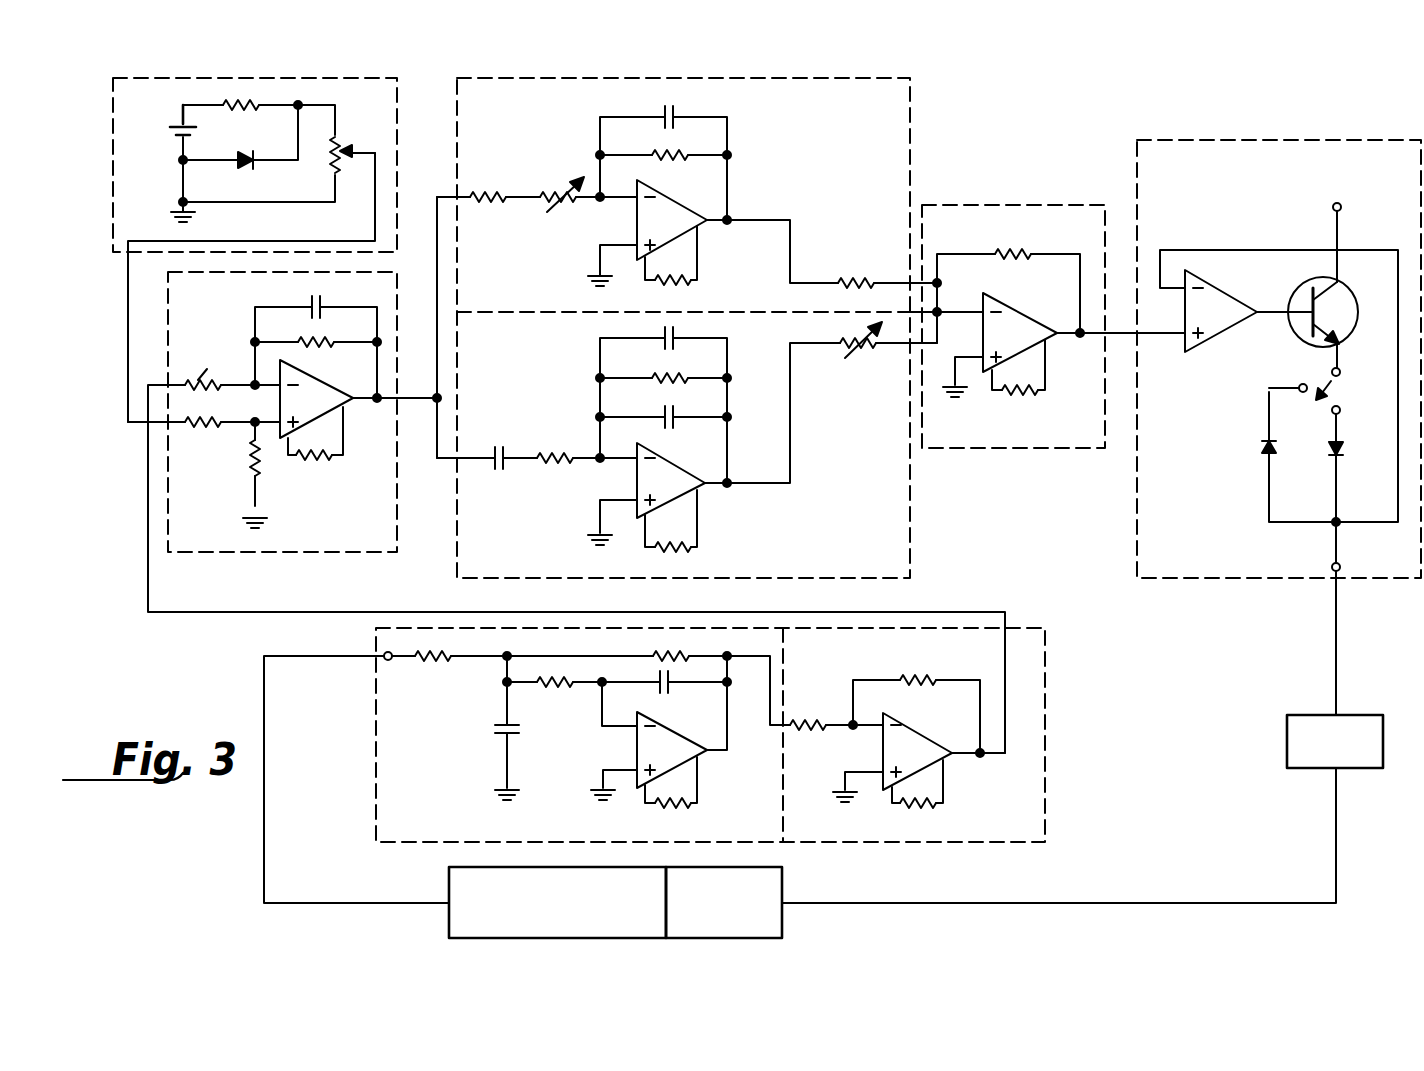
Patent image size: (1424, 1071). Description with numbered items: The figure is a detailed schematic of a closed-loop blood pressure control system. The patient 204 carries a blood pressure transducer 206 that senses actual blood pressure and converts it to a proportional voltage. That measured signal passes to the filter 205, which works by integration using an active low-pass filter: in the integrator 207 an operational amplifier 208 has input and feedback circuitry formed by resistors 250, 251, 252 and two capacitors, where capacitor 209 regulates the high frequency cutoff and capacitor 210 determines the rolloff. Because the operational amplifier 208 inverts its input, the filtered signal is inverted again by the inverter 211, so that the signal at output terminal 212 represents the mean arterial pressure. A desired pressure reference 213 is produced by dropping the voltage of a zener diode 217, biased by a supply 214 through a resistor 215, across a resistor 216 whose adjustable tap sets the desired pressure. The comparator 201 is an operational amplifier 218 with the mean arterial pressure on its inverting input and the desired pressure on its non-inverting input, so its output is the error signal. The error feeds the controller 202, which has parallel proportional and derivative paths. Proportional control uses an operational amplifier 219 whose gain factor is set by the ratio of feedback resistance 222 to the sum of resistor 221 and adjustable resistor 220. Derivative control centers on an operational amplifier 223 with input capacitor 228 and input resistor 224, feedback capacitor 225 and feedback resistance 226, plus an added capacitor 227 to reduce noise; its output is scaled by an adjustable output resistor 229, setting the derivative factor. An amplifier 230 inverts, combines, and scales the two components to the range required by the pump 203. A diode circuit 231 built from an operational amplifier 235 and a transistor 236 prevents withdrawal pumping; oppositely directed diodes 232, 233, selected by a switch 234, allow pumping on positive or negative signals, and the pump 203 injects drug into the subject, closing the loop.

The comparator 201 is at (566, 475).
The controller 202 is at (687, 314).
The pump 203 is at (1298, 722).
The patient 204 is at (785, 890).
The filter 205 is at (710, 751).
The blood pressure transducer 206 is at (452, 882).
The integrator 207 is at (591, 734).
The operational amplifier 208 is at (672, 742).
The capacitor 209 is at (494, 735).
The capacitor 210 is at (660, 690).
The inverter 211 is at (904, 757).
The output terminal 212 is at (983, 758).
The desired pressure reference 213 is at (402, 103).
The supply 214 is at (170, 126).
The resistor 215 is at (223, 104).
The resistor 216 is at (339, 172).
The zener diode 217 is at (247, 165).
The operational amplifier 218 is at (320, 392).
The operational amplifier 219 is at (672, 212).
The adjustable resistor 220 is at (552, 186).
The resistor 221 is at (492, 213).
The feedback resistance 222 is at (658, 150).
The operational amplifier 223 is at (672, 478).
The input resistor 224 is at (557, 452).
The feedback capacitor 225 is at (664, 415).
The feedback resistance 226 is at (660, 372).
The capacitor 227 is at (663, 332).
The input capacitor 228 is at (508, 466).
The adjustable output resistor 229 is at (872, 352).
The amplifier 230 is at (1053, 313).
The diode circuit 231 is at (1135, 158).
The diode 232 is at (1262, 444).
The diode 233 is at (1343, 447).
The switch 234 is at (1330, 397).
The operational amplifier 235 is at (1216, 327).
The transistor 236 is at (1300, 326).
The resistor 250 is at (432, 661).
The resistor 251 is at (562, 689).
The resistor 252 is at (655, 651).